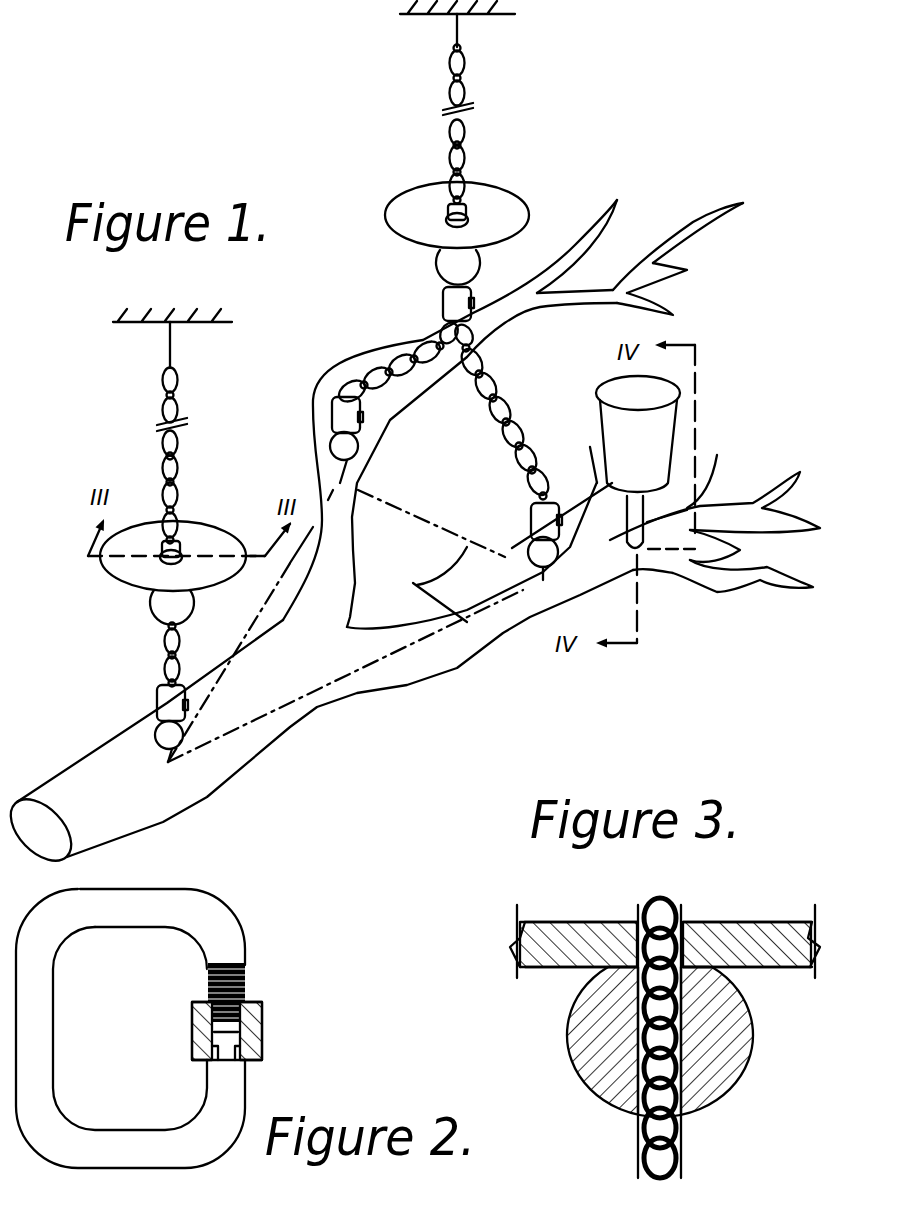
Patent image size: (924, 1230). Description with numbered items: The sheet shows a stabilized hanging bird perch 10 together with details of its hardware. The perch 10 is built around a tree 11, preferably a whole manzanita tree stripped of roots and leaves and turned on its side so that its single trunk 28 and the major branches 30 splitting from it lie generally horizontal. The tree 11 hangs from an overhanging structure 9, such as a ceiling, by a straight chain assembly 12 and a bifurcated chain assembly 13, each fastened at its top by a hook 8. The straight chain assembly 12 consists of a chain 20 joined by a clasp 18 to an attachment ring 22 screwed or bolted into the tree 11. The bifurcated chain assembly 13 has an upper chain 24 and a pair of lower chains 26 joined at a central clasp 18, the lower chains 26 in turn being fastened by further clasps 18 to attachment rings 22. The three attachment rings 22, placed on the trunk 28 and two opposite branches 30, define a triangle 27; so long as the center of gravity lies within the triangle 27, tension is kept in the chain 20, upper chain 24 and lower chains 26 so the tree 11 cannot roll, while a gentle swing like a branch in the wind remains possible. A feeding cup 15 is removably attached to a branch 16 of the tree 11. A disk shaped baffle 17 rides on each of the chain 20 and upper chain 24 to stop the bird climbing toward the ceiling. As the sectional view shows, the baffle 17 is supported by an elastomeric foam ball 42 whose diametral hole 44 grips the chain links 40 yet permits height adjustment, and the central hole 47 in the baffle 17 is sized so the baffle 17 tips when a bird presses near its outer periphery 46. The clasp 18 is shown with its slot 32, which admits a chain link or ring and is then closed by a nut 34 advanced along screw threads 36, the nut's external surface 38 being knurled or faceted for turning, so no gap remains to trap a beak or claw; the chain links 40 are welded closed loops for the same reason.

In FIG. 1, the hook 8 is at (460, 42).
In FIG. 1, the overhanging structure 9 is at (440, 17).
In FIG. 1, the stabilized hanging bird perch 10 is at (340, 737).
In FIG. 1, the tree 11 is at (410, 536).
In FIG. 1, the straight chain assembly 12 is at (173, 456).
In FIG. 1, the bifurcated chain assembly 13 is at (461, 124).
In FIG. 1, the feeding cup 15 is at (600, 410).
In FIG. 1, the branch 16 is at (637, 565).
In FIG. 1, the disk shaped baffle 17 is at (334, 398).
In FIG. 3, the disk shaped baffle 17 is at (665, 1021).
In FIG. 1, the clasp 18 is at (441, 304).
In FIG. 2, the clasp 18 is at (176, 1019).
In FIG. 1, the chain 20 is at (181, 458).
In FIG. 3, the chain 20 is at (688, 1142).
In FIG. 1, the attachment ring 22 is at (332, 450).
In FIG. 1, the upper chain 24 is at (465, 143).
In FIG. 1, the lower chain 26 is at (393, 350).
In FIG. 1, the triangle 27 is at (290, 562).
In FIG. 1, the trunk 28 is at (210, 793).
In FIG. 1, the major branch 30 is at (362, 468).
In FIG. 2, the slot 32 is at (224, 1035).
In FIG. 2, the nut 34 is at (188, 1010).
In FIG. 2, the screw threads 36 is at (243, 973).
In FIG. 2, the external surface 38 is at (263, 1025).
In FIG. 3, the chain link 40 is at (637, 914).
In FIG. 1, the ball 42 is at (437, 262).
In FIG. 3, the ball 42 is at (702, 1056).
In FIG. 3, the diametral hole 44 is at (630, 1110).
In FIG. 1, the outer periphery 46 is at (412, 192).
In FIG. 1, the central hole 47 is at (445, 222).
In FIG. 3, the central hole 47 is at (685, 922).